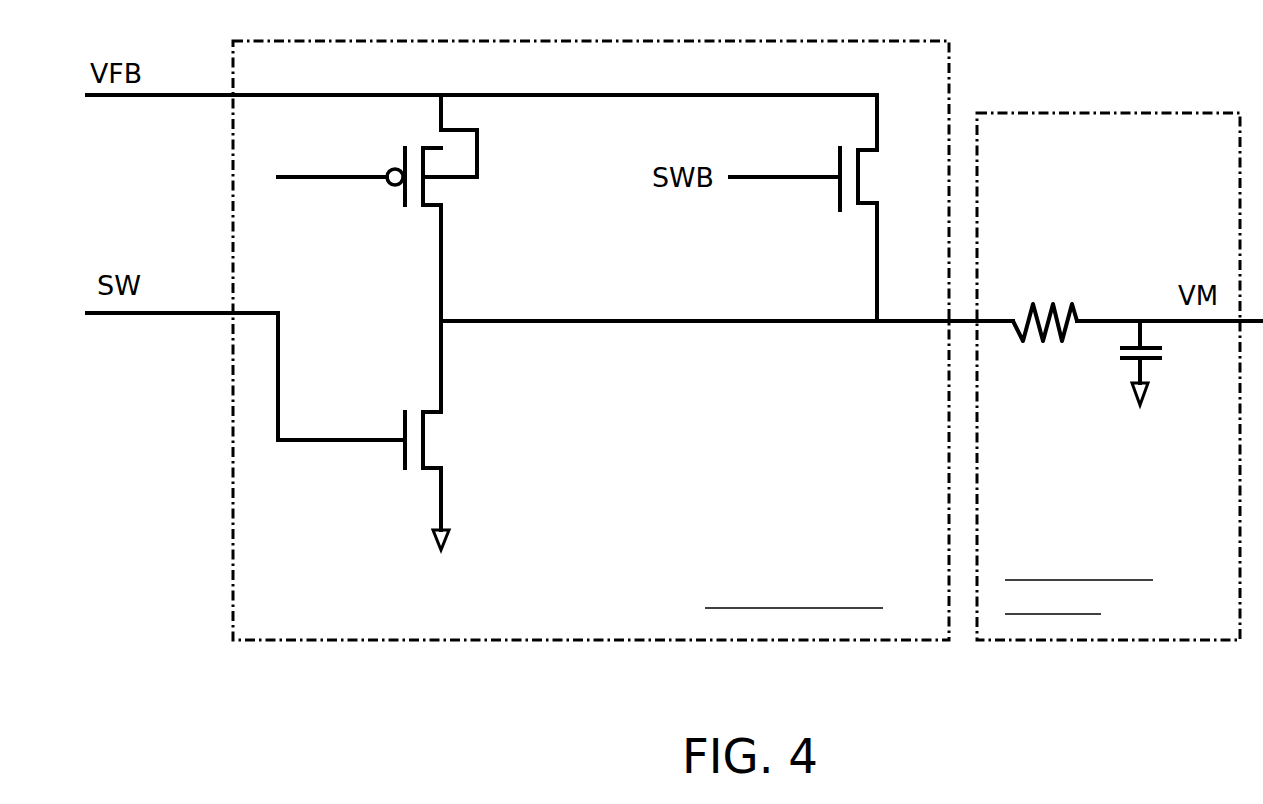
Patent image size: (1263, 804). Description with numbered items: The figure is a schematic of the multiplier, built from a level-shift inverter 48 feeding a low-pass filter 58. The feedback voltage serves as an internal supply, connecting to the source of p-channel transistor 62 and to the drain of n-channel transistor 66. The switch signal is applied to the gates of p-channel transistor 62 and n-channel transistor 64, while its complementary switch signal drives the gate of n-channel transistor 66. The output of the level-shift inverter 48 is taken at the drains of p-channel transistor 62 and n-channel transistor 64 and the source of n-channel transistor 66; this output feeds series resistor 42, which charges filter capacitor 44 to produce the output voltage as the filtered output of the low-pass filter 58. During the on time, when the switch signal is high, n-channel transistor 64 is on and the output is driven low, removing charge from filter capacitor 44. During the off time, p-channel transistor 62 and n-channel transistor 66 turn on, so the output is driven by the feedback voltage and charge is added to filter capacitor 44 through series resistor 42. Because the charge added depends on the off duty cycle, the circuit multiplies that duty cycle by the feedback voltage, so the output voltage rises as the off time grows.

The series resistor 42 is at (1030, 352).
The filter capacitor 44 is at (1120, 358).
The level-shift inverter 48 is at (818, 554).
The low-pass filter 58 is at (1063, 536).
The p-channel transistor 62 is at (430, 180).
The n-channel transistor 64 is at (432, 440).
The n-channel transistor 66 is at (838, 210).